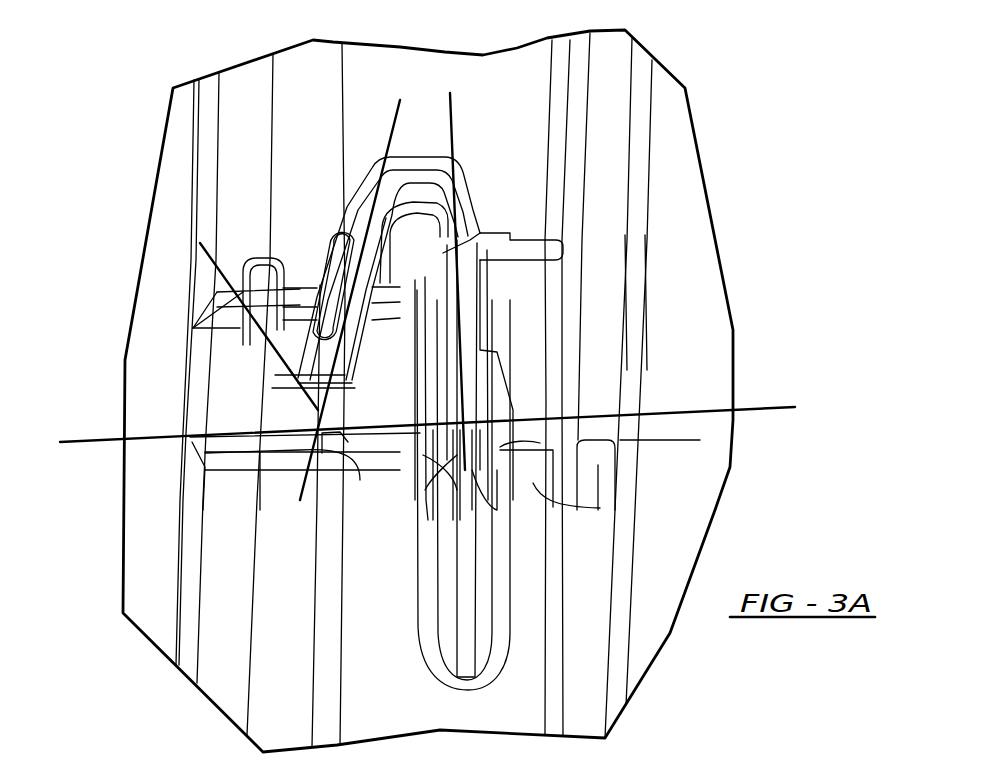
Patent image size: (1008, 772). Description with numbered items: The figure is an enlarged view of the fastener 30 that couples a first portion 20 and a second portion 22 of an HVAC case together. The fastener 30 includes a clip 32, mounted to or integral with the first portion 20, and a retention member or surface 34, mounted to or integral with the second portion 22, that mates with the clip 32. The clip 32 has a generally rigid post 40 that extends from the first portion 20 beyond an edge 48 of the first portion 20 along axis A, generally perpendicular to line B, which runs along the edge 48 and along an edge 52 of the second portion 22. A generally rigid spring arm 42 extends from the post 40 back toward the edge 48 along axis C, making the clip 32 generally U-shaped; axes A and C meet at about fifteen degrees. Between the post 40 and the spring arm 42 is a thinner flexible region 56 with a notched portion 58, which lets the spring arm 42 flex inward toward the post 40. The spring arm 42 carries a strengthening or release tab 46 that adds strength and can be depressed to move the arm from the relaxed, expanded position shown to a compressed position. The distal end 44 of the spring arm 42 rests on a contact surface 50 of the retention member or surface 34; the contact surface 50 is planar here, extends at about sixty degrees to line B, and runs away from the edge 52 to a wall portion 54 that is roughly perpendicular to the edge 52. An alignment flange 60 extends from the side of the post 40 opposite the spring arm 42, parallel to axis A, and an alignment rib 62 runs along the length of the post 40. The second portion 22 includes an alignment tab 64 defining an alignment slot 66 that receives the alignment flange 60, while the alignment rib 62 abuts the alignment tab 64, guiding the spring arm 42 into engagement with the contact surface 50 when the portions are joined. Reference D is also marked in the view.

The first portion of the case 20 is at (500, 692).
The second portion of the case 22 is at (527, 80).
The fastener 30 is at (173, 367).
The clip 32 is at (418, 156).
The retention member or surface 34 is at (257, 348).
The post 40 is at (433, 350).
The spring arm 42 is at (373, 187).
The distal end 44 is at (337, 390).
The strengthening or release tab 46 is at (337, 277).
The edge of the first portion 48 is at (530, 470).
The contact surface 50 is at (290, 357).
The edge of the second portion 52 is at (567, 403).
The wall portion 54 is at (260, 273).
The flexible region 56 is at (597, 28).
The notched portion 58 is at (414, 242).
The alignment flange 60 is at (458, 216).
The alignment rib 62 is at (467, 370).
The alignment tab 64 is at (502, 278).
The alignment slot 66 is at (520, 243).
The axis A is at (450, 95).
The line B is at (97, 443).
The axis C is at (393, 128).
The axis D is at (222, 270).